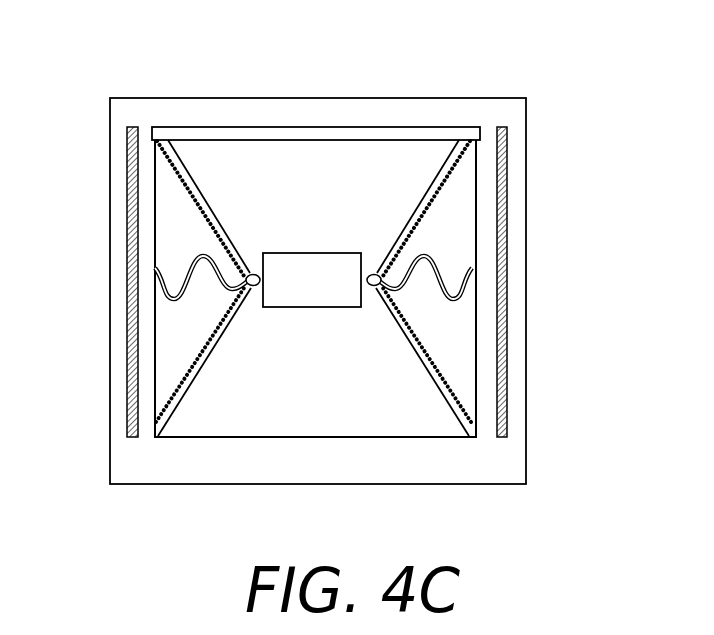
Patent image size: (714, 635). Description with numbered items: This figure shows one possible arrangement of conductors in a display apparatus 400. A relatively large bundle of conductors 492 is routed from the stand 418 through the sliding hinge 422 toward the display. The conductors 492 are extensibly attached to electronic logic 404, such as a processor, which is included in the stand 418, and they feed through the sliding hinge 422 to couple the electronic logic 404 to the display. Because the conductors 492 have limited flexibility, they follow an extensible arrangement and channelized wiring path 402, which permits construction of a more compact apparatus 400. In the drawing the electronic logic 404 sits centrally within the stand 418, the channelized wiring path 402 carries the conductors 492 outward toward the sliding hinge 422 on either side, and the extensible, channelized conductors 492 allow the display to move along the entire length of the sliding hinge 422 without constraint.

The apparatus 400 is at (358, 85).
The channelized wiring path 402 is at (224, 328).
The electronic logic 404 is at (314, 252).
The stand 418 is at (317, 472).
The sliding hinge 422 is at (130, 332).
The conductors 492 is at (197, 204).